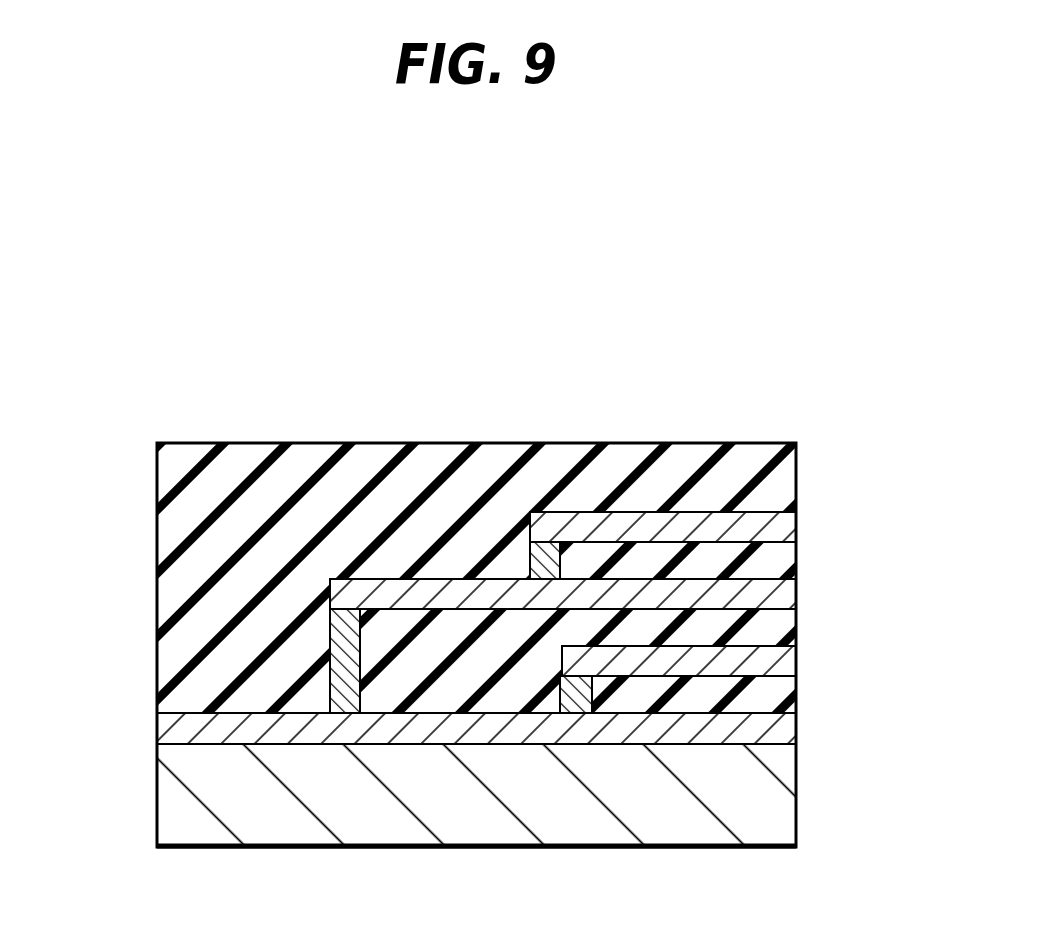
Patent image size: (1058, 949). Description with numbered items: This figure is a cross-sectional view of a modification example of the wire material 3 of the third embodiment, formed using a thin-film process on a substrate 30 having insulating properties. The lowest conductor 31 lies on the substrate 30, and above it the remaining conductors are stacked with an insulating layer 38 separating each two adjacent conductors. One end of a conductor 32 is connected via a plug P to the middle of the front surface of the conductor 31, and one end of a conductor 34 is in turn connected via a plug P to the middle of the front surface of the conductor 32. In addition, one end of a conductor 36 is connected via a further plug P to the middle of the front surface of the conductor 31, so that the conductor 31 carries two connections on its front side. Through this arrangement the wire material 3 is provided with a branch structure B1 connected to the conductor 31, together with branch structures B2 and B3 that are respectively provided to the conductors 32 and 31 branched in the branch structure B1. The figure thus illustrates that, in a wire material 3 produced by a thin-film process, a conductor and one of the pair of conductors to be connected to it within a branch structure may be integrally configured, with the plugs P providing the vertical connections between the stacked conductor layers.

The wire material 3 is at (518, 227).
The substrate 30 is at (778, 803).
The conductor 31 is at (173, 732).
The conductor 32 is at (783, 595).
The conductor 34 is at (783, 528).
The conductor 36 is at (783, 660).
The insulating layer 38 is at (762, 453).
The plug P is at (561, 559).
The branch structure B1 is at (350, 757).
The branch structure B2 is at (521, 565).
The branch structure B3 is at (573, 757).